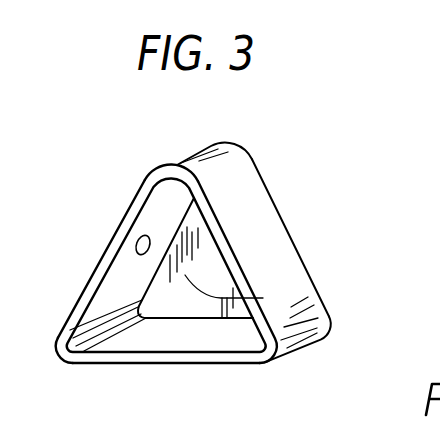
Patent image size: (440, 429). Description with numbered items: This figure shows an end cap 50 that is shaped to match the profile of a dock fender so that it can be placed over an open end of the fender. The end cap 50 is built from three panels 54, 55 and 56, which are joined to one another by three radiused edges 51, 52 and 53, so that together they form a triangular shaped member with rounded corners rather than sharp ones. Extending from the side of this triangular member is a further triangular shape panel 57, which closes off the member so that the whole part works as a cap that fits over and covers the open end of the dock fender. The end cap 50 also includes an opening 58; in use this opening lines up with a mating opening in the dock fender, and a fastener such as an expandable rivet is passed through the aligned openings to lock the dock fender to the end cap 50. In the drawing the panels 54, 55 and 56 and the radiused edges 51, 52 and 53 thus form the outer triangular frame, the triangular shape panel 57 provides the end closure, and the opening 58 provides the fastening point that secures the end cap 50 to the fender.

The end cap 50 is at (240, 138).
The radiused edge 51 is at (298, 342).
The radiused edge 52 is at (195, 153).
The radiused edge 53 is at (56, 350).
The panel 54 is at (161, 364).
The panel 55 is at (223, 228).
The panel 56 is at (118, 230).
The triangular shape panel 57 is at (263, 298).
The opening 58 is at (134, 247).